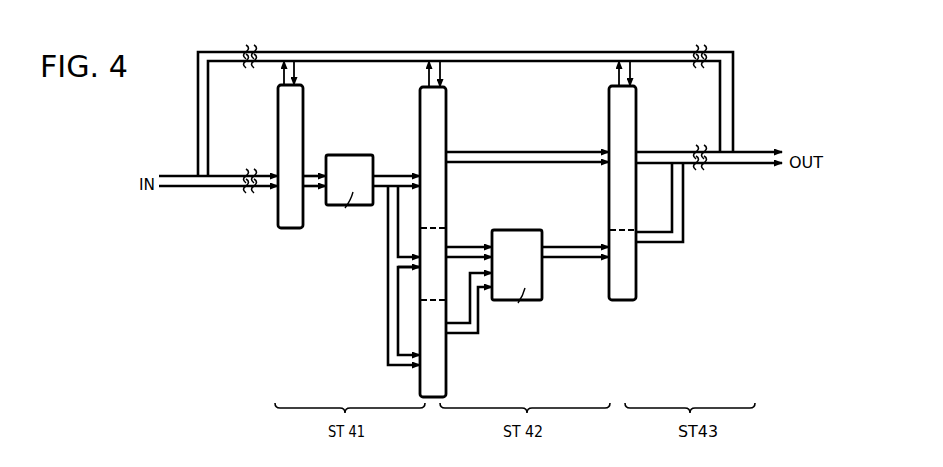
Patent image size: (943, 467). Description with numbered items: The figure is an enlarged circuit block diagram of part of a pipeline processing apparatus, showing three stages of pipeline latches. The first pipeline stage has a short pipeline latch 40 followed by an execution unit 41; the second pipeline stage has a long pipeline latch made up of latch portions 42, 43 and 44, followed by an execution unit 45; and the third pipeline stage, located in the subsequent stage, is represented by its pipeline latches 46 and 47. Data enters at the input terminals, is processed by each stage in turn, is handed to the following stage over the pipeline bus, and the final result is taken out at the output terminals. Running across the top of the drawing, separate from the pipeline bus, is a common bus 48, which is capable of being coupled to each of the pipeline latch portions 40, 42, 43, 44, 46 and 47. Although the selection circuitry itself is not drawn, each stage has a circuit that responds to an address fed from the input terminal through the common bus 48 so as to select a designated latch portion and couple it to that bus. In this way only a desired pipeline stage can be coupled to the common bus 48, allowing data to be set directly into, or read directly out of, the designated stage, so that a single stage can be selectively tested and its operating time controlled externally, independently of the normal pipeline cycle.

The short pipeline latch 40 is at (305, 137).
The execution unit 41 is at (373, 162).
The long pipeline latch portion 42 is at (447, 135).
The long pipeline latch portion 43 is at (442, 239).
The long pipeline latch portion 44 is at (447, 372).
The execution unit 45 is at (543, 230).
The pipeline latch 46 is at (638, 117).
The pipeline latch 47 is at (637, 293).
The common bus 48 is at (499, 51).